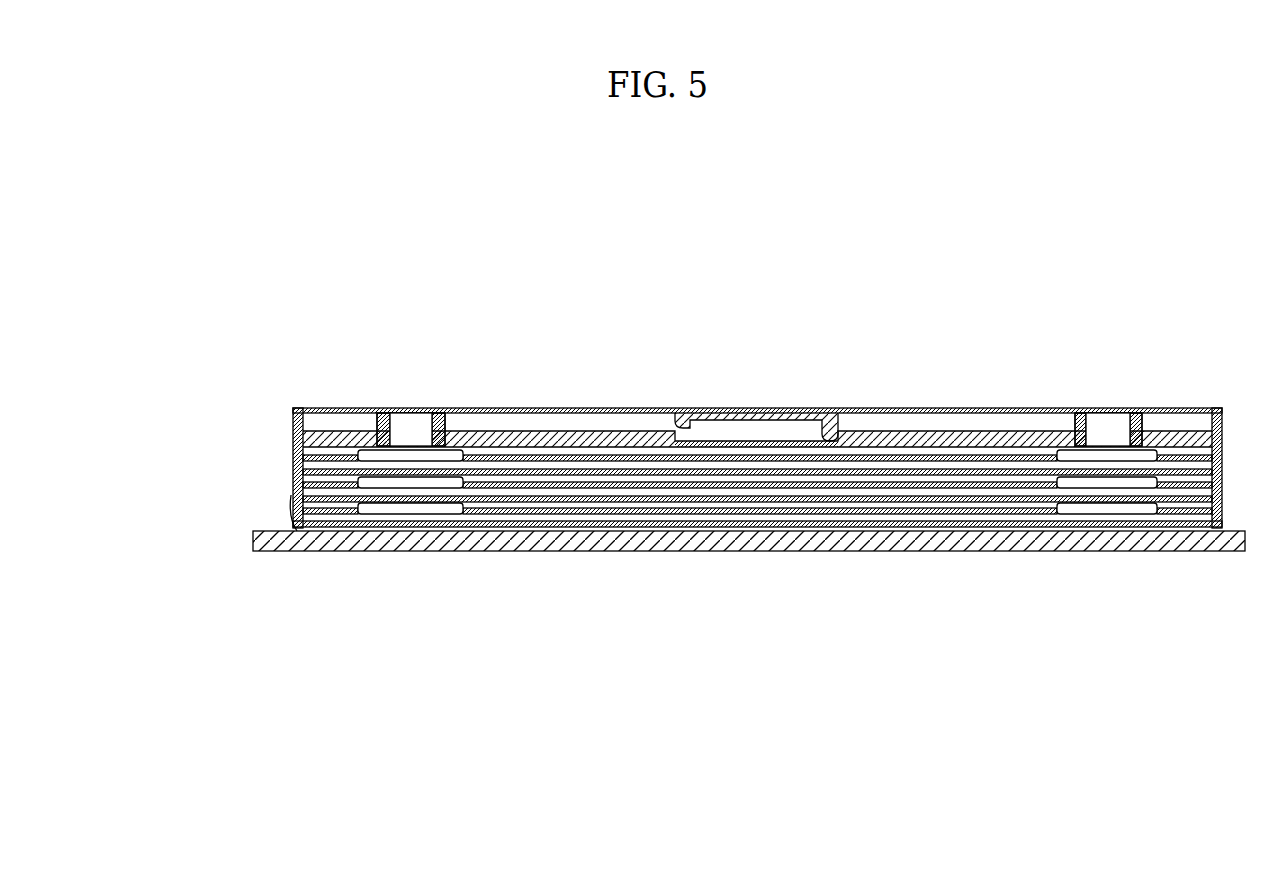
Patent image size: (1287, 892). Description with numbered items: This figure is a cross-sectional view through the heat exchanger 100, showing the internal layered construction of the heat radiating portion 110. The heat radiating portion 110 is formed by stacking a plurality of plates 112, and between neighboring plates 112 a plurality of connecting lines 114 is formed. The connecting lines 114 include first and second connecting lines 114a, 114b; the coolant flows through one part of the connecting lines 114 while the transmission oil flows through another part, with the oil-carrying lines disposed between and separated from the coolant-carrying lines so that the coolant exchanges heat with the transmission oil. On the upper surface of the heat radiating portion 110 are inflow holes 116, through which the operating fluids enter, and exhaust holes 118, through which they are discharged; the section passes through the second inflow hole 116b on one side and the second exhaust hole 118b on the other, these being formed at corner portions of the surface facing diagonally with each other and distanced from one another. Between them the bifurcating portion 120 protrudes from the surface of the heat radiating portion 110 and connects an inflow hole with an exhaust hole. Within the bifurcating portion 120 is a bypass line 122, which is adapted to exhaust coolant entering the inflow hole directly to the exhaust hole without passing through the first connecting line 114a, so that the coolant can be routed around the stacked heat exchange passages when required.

The heat exchanger 100 is at (770, 234).
The heat radiating portion 110 is at (280, 484).
The plate 112 is at (343, 527).
The connecting line 114 is at (757, 541).
The first connecting line 114a is at (601, 448).
The second connecting line 114b is at (502, 463).
The inflow hole 116 is at (444, 409).
The second inflow hole 116b is at (398, 414).
The exhaust hole 118 is at (1088, 403).
The second exhaust hole 118b is at (1118, 412).
The bifurcating portion 120 is at (787, 406).
The bypass line 122 is at (715, 425).